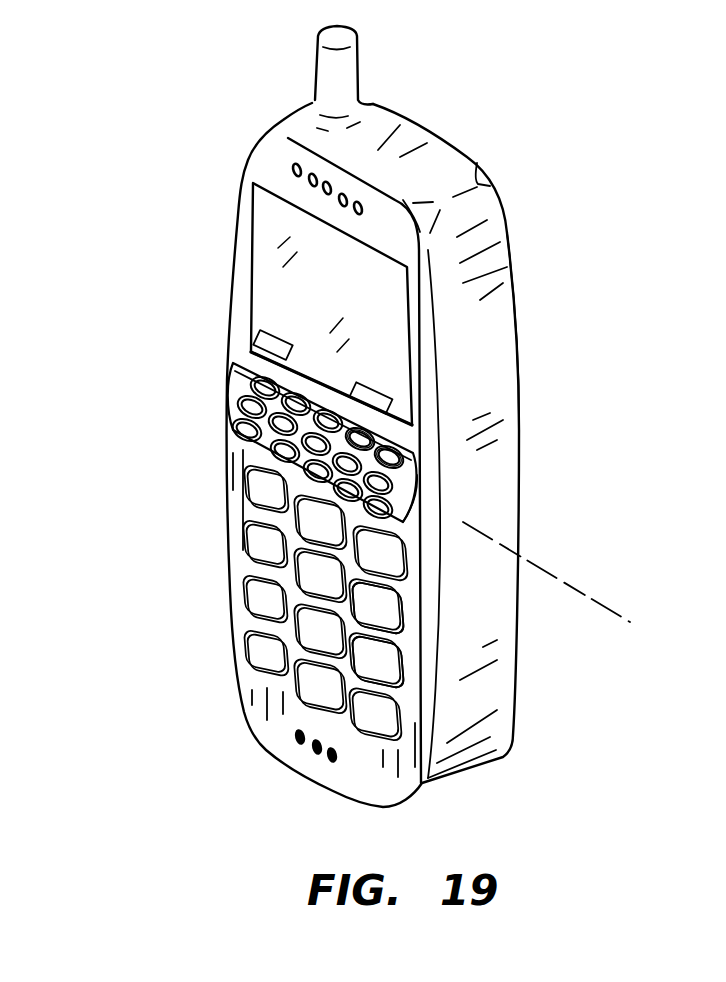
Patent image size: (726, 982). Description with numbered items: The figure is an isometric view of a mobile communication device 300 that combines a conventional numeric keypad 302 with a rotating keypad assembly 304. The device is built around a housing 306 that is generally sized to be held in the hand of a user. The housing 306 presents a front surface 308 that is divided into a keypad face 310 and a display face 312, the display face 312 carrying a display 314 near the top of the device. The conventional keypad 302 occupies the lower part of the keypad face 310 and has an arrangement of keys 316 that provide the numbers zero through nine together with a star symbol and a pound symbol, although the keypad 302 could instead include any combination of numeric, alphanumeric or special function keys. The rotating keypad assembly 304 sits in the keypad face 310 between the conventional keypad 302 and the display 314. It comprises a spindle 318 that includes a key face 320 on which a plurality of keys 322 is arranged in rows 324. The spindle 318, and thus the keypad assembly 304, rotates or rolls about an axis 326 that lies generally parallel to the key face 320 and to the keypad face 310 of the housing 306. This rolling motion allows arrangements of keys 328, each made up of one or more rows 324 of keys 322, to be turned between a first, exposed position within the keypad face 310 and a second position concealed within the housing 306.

The mobile communication device 300 is at (448, 88).
The conventional numeric keypad 302 is at (400, 602).
The rotating keypad assembly 304 is at (407, 500).
The housing 306 is at (498, 340).
The front surface 308 is at (417, 667).
The keypad face 310 is at (240, 560).
The display face 312 is at (410, 252).
The display 314 is at (252, 218).
The keys 316 is at (245, 647).
The spindle 318 is at (232, 437).
The key face 320 is at (235, 407).
The keys 322 is at (403, 450).
The rows 324 is at (390, 407).
The axis 326 is at (227, 383).
The arrangements of keys 328 is at (258, 352).